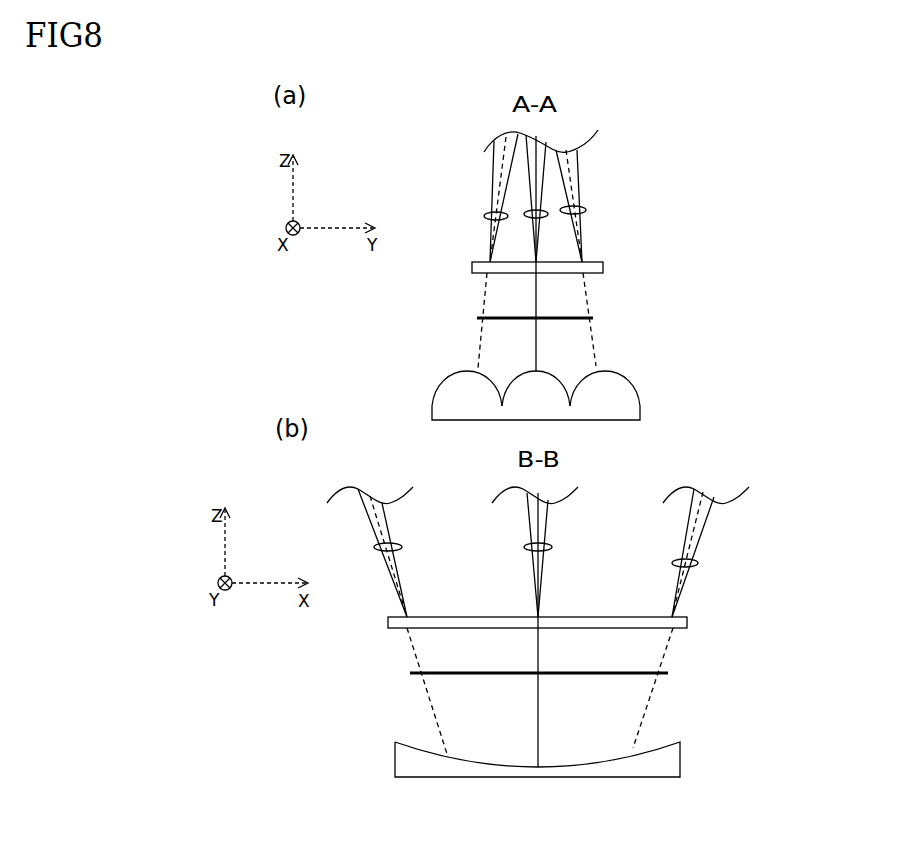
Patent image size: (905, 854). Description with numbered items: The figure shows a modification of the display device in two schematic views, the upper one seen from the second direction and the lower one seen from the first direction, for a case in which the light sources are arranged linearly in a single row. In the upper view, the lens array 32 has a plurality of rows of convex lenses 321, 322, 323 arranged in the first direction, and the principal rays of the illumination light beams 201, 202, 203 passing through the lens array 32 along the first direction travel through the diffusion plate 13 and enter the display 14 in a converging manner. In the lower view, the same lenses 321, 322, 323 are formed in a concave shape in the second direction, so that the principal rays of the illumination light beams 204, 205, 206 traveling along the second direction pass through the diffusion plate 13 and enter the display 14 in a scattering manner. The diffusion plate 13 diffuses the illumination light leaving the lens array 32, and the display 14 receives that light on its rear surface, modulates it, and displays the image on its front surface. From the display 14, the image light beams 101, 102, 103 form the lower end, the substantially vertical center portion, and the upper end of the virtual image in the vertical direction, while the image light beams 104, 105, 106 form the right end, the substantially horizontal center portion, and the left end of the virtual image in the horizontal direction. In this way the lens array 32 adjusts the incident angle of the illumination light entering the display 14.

The image light beam 101 is at (587, 210).
The image light beam 102 is at (528, 212).
The image light beam 103 is at (484, 216).
The image light beam 104 is at (699, 562).
The image light beam 105 is at (552, 547).
The image light beam 106 is at (402, 546).
The diffusion plate 13 is at (593, 318).
The display 14 is at (603, 263).
The illumination light beam 201 is at (588, 293).
The illumination light beam 202 is at (535, 294).
The illumination light beam 203 is at (481, 305).
The illumination light beam 204 is at (652, 689).
The illumination light beam 205 is at (538, 707).
The illumination light beam 206 is at (438, 714).
The lens array 32 is at (455, 370).
The convex lens 321 is at (623, 400).
The convex lens 322 is at (548, 378).
The convex lens 323 is at (450, 393).